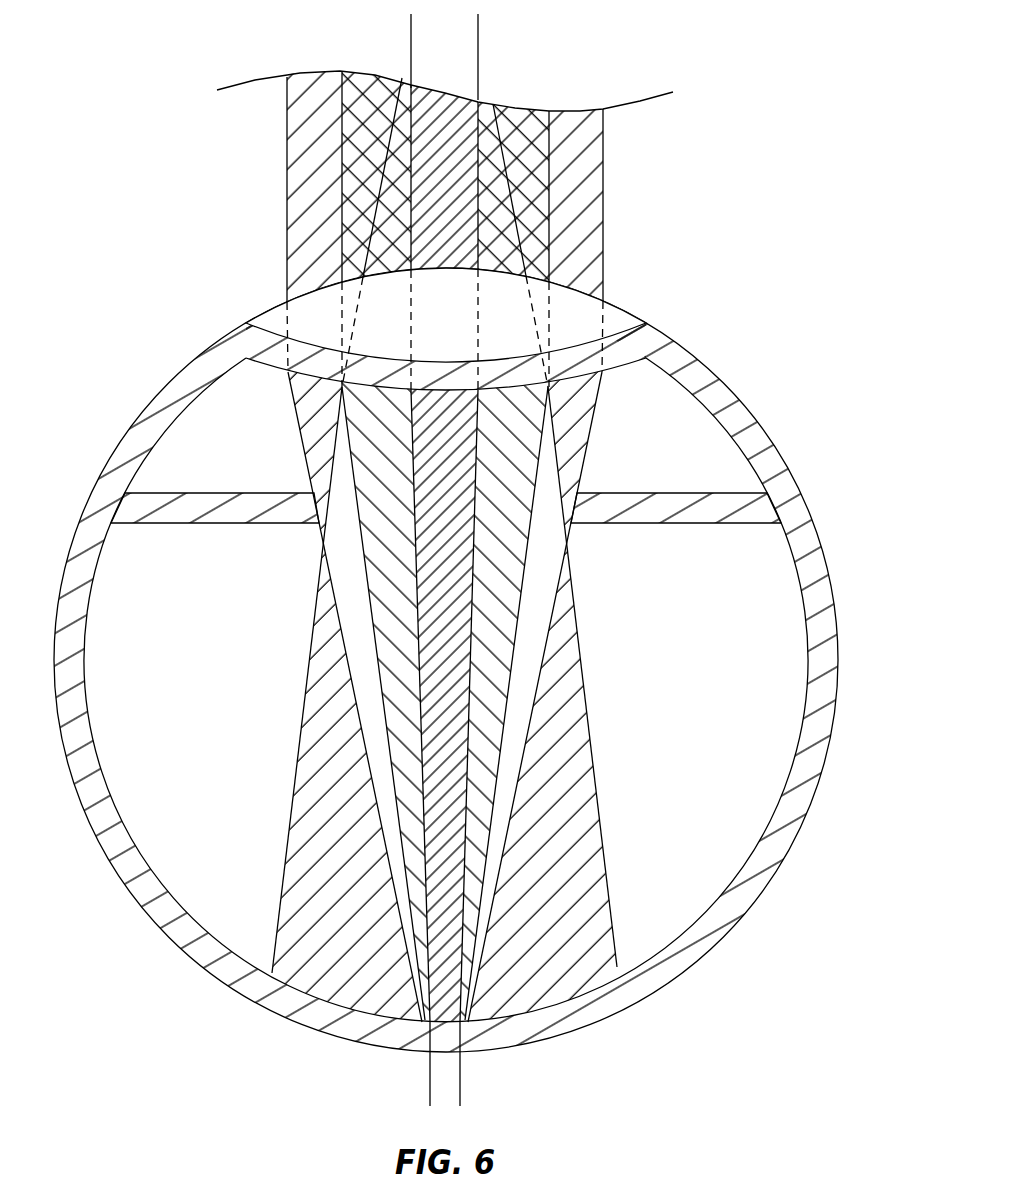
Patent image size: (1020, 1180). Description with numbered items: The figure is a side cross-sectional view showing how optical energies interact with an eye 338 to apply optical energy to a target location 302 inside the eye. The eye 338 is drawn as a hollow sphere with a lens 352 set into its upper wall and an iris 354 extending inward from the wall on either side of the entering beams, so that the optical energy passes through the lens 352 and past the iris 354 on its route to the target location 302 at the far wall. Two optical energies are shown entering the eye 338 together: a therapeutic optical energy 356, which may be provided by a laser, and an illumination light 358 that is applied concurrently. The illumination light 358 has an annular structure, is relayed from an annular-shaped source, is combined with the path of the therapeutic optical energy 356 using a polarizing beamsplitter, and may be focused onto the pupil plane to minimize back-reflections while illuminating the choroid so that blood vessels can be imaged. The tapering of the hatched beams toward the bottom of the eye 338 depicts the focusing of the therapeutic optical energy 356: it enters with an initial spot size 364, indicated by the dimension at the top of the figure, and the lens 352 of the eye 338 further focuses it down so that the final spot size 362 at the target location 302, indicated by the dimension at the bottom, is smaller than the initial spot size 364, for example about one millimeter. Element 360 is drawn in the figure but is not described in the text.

The target location 302 is at (457, 988).
The eye 338 is at (119, 337).
The lens 352 is at (587, 318).
The iris 354 is at (720, 492).
The therapeutic optical energy 356 is at (460, 592).
The illumination light 358 is at (590, 958).
The inner cladding 360 is at (490, 712).
The final spot size 362 is at (472, 1092).
The initial spot size 364 is at (488, 29).